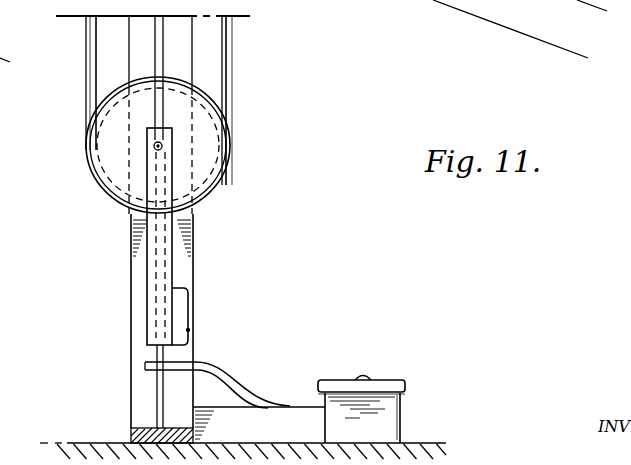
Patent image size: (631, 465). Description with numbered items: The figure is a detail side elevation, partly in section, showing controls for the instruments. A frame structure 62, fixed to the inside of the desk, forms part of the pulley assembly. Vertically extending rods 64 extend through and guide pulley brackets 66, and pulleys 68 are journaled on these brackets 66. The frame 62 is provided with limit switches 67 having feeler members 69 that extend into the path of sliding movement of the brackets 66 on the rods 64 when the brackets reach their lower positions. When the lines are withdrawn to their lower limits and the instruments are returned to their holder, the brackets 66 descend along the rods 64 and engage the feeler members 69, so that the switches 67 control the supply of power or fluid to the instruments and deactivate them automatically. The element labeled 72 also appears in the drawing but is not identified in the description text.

The frame structure 62 is at (194, 252).
The vertically extending rods 64 is at (155, 58).
The pulley brackets 66 is at (152, 179).
The limit switches 67 is at (262, 410).
The pulleys 68 is at (206, 149).
The feeler members 69 is at (218, 366).
The cylinder casing 72 is at (231, 64).